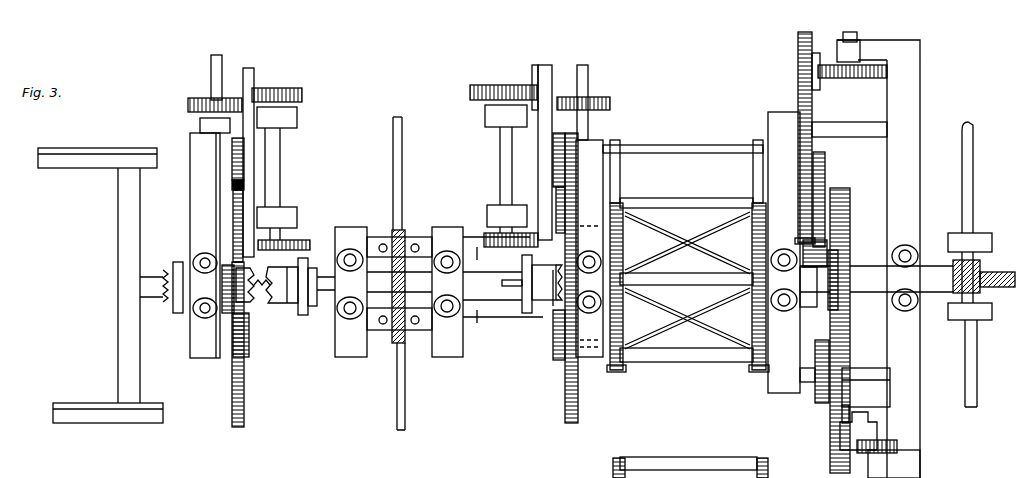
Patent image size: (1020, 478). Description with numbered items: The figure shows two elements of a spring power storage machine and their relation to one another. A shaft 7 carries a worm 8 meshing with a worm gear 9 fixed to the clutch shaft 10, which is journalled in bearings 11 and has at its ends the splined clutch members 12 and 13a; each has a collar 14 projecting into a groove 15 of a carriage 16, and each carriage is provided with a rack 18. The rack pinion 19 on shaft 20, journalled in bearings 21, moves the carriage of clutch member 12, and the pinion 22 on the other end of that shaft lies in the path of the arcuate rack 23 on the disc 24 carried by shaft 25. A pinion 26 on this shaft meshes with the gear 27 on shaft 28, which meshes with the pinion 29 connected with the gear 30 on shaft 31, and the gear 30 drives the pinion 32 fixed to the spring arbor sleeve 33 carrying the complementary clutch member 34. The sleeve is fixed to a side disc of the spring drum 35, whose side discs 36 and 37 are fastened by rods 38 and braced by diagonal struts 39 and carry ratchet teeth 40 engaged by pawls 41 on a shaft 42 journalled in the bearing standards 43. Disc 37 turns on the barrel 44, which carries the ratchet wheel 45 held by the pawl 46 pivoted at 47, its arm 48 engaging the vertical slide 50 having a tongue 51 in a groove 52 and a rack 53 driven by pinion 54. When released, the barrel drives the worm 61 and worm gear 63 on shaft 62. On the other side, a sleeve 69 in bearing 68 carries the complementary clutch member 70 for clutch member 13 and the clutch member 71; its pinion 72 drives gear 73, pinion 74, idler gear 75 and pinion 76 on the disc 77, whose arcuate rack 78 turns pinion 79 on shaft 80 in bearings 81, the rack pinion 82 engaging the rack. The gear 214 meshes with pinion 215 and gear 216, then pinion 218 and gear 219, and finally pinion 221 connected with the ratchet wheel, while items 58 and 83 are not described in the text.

The shaft 7 is at (405, 411).
The worm 8 is at (312, 240).
The worm gear 9 is at (404, 345).
The clutch shaft 10 is at (455, 283).
The bearings 11 is at (355, 357).
The clutch member 12 is at (515, 287).
The clutch member 13 is at (478, 337).
The clutch member 13a is at (287, 304).
The collar 14 is at (302, 316).
The groove 15 is at (320, 241).
The carriage 16 is at (313, 308).
The rack 18 is at (485, 235).
The rack pinion 19 is at (500, 247).
The shaft 20 is at (500, 160).
The bearings 21 is at (485, 125).
The pinion 22 is at (494, 85).
The arcuate rack 23 is at (537, 78).
The disc 24 is at (552, 85).
The shaft 25 is at (216, 165).
The pinion 26 is at (566, 178).
The gear 27 is at (566, 202).
The shaft 28 is at (566, 215).
The pinion 29 is at (565, 368).
The gear 30 is at (578, 415).
The shaft 31 is at (553, 348).
The pinion 32 is at (566, 273).
The spring arbor sleeve 33 is at (636, 311).
The complementary clutch member 34 is at (566, 287).
The spring drum 35 is at (672, 350).
The side disc 36 is at (622, 460).
The side disc 37 is at (758, 458).
The rods 38 is at (690, 199).
The diagonal struts 39 is at (712, 232).
The ratchet teeth 40 is at (611, 365).
The pawls 41 is at (623, 176).
The shaft 42 is at (693, 146).
The bearing standards 43 is at (603, 142).
The barrel 44 is at (786, 331).
The ratchet wheel 45 is at (850, 337).
The pawl 46 is at (850, 396).
The pivot 47 is at (862, 420).
The arm 48 is at (813, 290).
The vertical slide 50 is at (866, 259).
The tongue 51 is at (877, 425).
The groove 52 is at (878, 414).
The rack 53 is at (905, 458).
The pinion 54 is at (897, 447).
The brace 58 is at (712, 350).
The worm 61 is at (982, 268).
The shaft 62 is at (973, 176).
The worm gear 63 is at (1000, 287).
The bearing 68 is at (203, 319).
The sleeve 69 is at (196, 262).
The complementary clutch member 70 is at (250, 302).
The clutch member 71 is at (166, 301).
The pinion 72 is at (222, 281).
The gear 73 is at (232, 392).
The pinion 74 is at (250, 360).
The idler gear 75 is at (232, 222).
The pinion 76 is at (232, 182).
The disc 77 is at (252, 177).
The arcuate rack 78 is at (254, 80).
The pinion 79 is at (302, 93).
The shaft 80 is at (282, 193).
The bearings 81 is at (297, 121).
The rack pinion 82 is at (300, 240).
The bracket plate 83 is at (70, 160).
The gear 214 is at (800, 96).
The pinion 215 is at (797, 252).
The gear 216 is at (825, 175).
The pinion 218 is at (815, 398).
The gear 219 is at (830, 462).
The pinion 221 is at (840, 258).